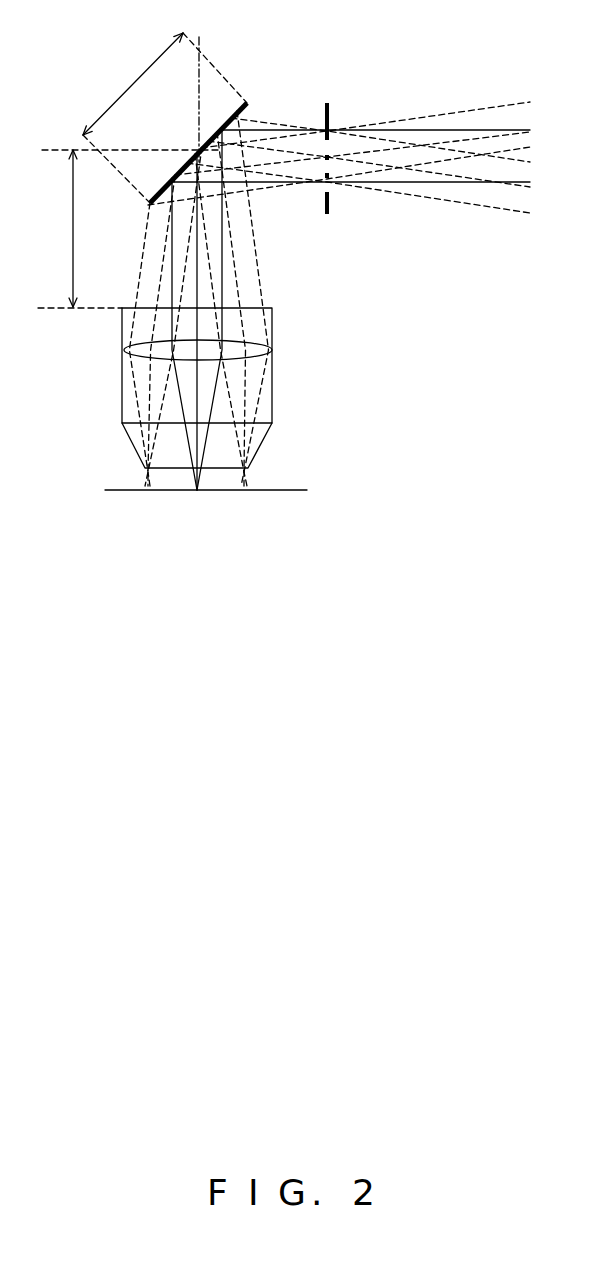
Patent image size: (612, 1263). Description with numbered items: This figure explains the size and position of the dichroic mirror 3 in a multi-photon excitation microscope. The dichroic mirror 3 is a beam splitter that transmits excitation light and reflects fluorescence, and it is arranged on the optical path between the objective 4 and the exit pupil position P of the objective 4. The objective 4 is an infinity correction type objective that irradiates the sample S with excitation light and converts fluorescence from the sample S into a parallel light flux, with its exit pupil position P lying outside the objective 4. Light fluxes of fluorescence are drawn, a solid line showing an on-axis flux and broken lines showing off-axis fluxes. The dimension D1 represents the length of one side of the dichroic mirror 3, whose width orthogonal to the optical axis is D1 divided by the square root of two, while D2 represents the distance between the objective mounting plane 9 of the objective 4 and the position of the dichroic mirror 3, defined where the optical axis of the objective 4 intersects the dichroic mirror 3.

The dichroic mirror 3 is at (233, 112).
The objective 4 is at (122, 407).
The objective mounting plane 9 is at (92, 309).
The exit pupil position P is at (312, 110).
The sample S is at (288, 490).
The length of one side of the dichroic mirror D1 is at (165, 118).
The distance between objective mounting plane and dichroic mirror position D2 is at (130, 228).